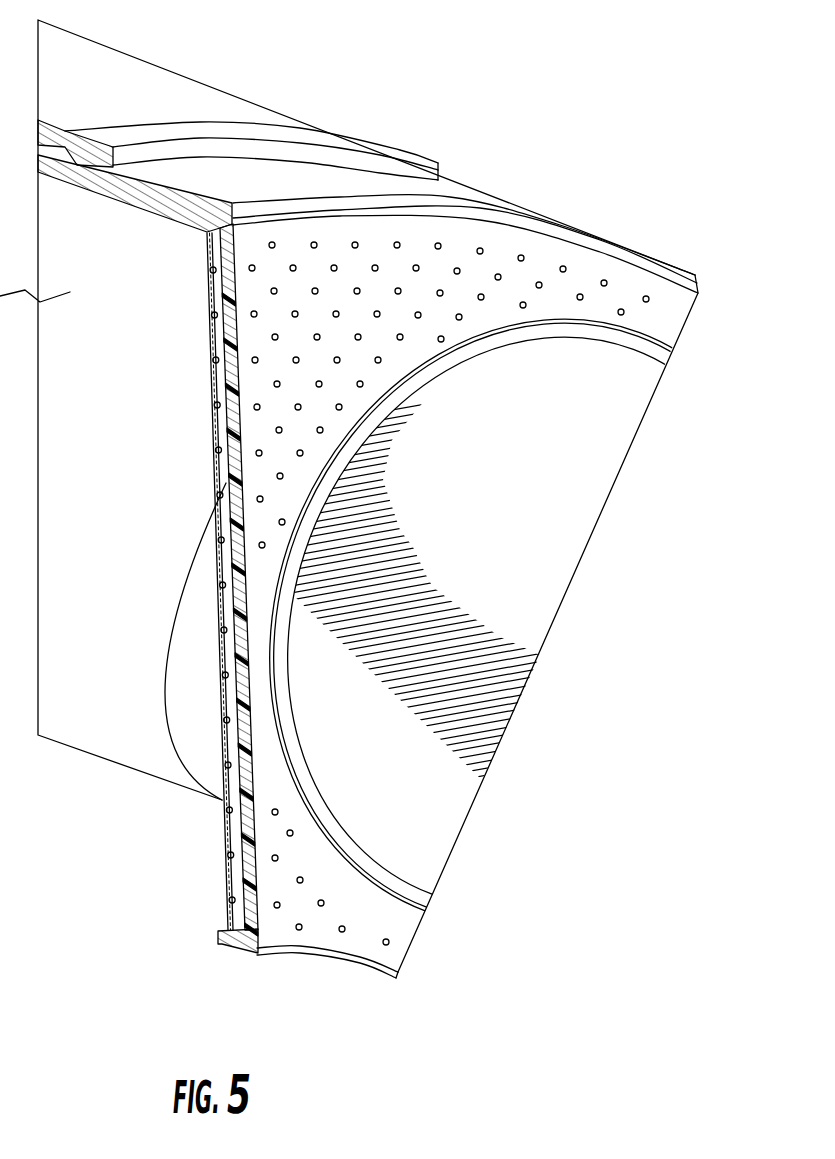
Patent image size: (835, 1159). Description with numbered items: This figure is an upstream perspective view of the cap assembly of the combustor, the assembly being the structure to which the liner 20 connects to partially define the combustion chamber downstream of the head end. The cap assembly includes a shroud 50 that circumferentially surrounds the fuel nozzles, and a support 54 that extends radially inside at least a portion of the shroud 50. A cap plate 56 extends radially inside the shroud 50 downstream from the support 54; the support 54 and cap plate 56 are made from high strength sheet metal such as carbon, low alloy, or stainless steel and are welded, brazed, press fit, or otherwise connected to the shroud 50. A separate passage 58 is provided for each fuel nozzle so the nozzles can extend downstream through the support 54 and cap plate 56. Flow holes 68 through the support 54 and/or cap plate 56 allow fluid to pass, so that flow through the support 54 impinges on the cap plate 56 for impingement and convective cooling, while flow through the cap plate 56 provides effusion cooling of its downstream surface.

The liner 20 is at (455, 198).
The shroud 50 is at (233, 100).
The support 54 is at (230, 912).
The cap plate 56 is at (360, 935).
The passage 58 is at (648, 414).
The flow holes 68 is at (515, 303).